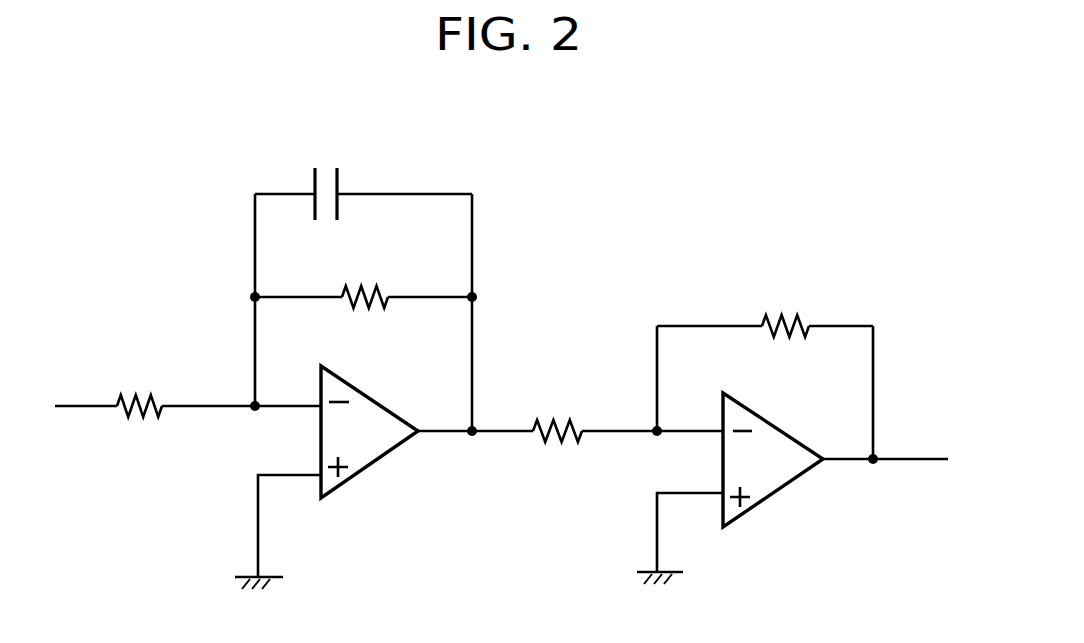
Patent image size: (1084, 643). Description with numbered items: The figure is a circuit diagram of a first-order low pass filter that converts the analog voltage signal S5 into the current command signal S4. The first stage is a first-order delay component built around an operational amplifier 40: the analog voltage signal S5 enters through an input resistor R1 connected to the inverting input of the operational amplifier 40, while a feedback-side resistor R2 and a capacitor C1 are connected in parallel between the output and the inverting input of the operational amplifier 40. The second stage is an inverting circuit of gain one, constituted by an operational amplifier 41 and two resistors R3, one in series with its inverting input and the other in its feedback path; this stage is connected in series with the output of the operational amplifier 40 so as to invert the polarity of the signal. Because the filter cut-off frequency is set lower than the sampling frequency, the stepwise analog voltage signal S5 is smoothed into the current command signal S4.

The operational amplifier 40 is at (390, 453).
The operational amplifier 41 is at (795, 478).
The capacitor C1 is at (363, 175).
The input resistor R1 is at (219, 389).
The feedback-side resistor R2 is at (363, 281).
The resistors R3 is at (703, 360).
The analog voltage signal S5 is at (85, 406).
The current command signal S4 is at (930, 458).